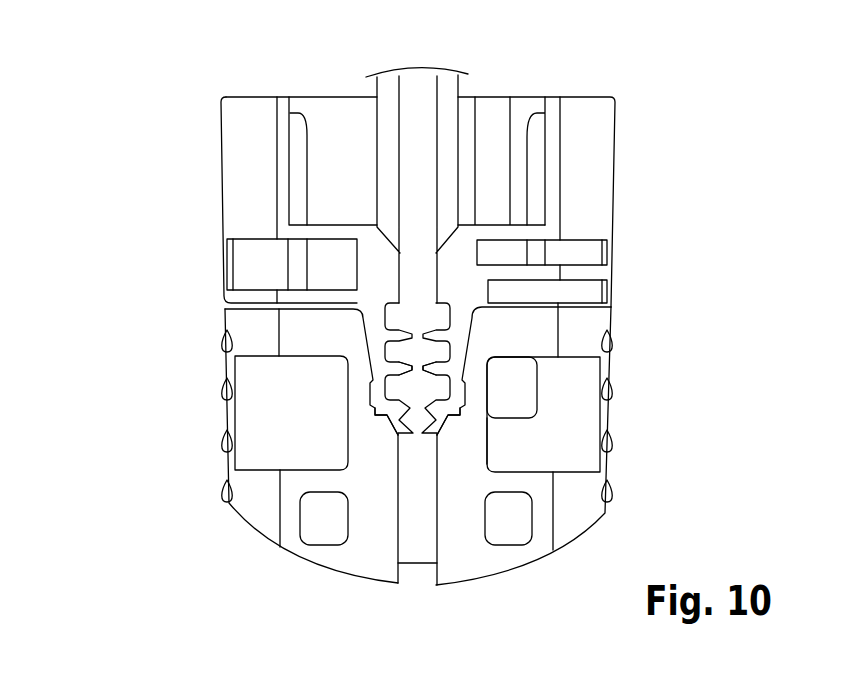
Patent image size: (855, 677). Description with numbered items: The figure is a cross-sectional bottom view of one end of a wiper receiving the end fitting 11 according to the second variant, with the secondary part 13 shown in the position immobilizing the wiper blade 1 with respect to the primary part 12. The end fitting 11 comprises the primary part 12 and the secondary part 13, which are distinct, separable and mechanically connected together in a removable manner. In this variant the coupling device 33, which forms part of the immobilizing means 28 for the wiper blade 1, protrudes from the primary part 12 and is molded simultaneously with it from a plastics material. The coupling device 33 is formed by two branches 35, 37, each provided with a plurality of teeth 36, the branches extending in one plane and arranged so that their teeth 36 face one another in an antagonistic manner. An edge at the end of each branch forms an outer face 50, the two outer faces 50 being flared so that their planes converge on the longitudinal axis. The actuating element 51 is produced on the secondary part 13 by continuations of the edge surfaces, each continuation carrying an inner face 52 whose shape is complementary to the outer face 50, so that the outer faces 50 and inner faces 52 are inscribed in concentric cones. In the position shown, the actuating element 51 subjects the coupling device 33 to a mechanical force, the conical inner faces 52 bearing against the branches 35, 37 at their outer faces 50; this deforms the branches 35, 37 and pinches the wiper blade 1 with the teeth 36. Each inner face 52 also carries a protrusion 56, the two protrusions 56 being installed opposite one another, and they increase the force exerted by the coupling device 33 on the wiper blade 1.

The wiper blade 1 is at (413, 90).
The end fitting 11 is at (150, 102).
The primary part 12 is at (650, 132).
The secondary part 13 is at (625, 520).
The immobilizing means 28 is at (355, 406).
The coupling device 33 is at (462, 336).
The branch 35 is at (375, 342).
The tooth 36 is at (404, 330).
The branch 37 is at (458, 320).
The outer face 50 is at (480, 373).
The actuating element 51 is at (452, 383).
The inner face 52 is at (468, 365).
The protrusion 56 is at (375, 380).